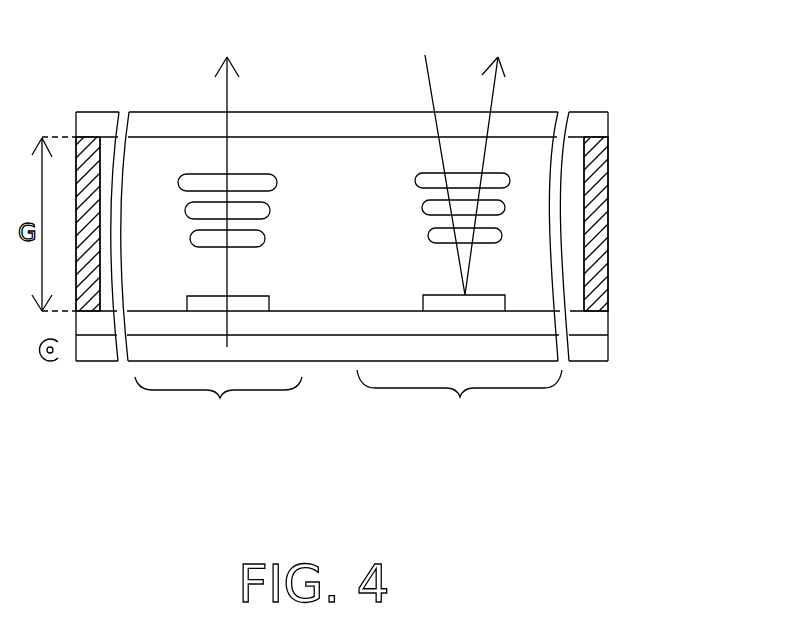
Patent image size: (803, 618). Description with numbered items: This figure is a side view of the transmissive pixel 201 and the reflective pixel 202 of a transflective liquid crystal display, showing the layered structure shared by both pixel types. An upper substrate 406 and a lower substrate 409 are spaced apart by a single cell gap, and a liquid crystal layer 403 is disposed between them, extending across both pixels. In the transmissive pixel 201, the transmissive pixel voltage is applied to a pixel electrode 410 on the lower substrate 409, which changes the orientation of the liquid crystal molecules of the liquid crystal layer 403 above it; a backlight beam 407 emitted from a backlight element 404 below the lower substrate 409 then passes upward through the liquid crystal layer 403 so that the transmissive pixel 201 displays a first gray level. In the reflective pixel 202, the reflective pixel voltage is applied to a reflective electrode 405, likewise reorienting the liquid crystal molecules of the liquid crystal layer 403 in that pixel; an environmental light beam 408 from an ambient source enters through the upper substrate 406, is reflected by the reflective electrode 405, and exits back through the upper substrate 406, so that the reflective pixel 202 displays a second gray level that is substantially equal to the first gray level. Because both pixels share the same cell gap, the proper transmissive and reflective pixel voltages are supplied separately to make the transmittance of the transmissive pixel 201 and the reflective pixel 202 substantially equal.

The transmissive pixel 201 is at (218, 406).
The reflective pixel 202 is at (459, 402).
The liquid crystal layer 403 is at (507, 209).
The backlight element 404 is at (608, 348).
The reflective electrode 405 is at (497, 295).
The upper substrate 406 is at (608, 122).
The backlight beam 407 is at (225, 184).
The environmental light beam 408 is at (454, 158).
The lower substrate 409 is at (608, 310).
The pixel electrode 410 is at (248, 296).